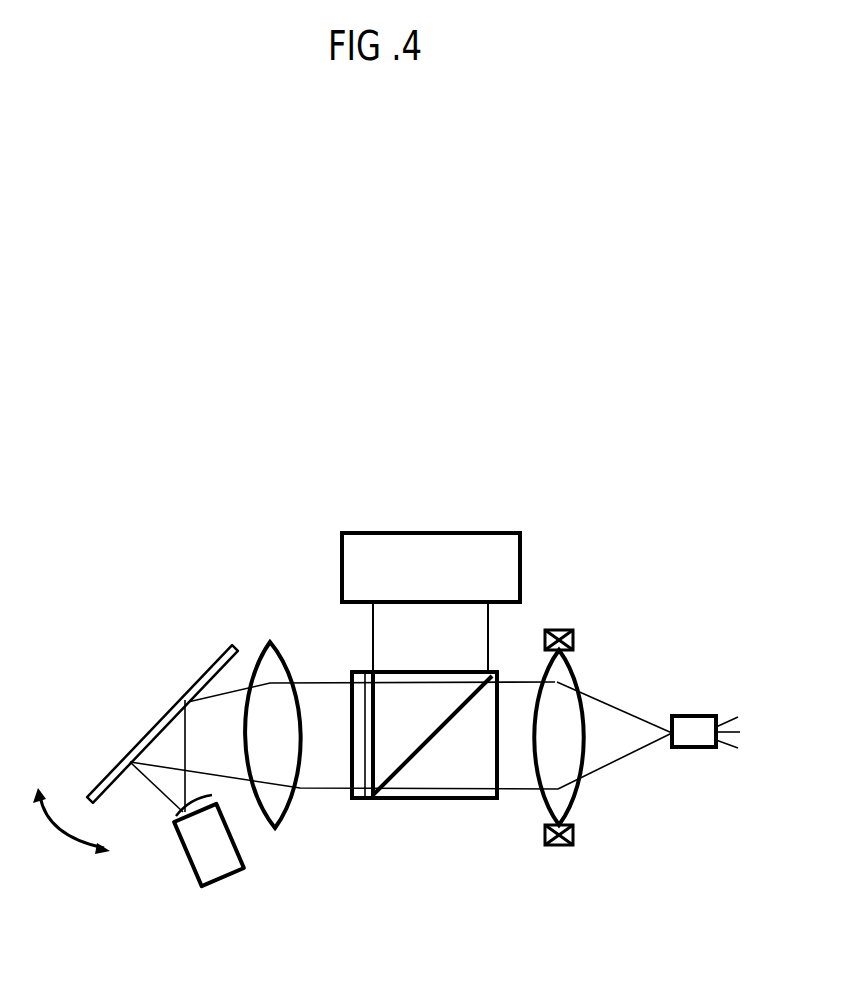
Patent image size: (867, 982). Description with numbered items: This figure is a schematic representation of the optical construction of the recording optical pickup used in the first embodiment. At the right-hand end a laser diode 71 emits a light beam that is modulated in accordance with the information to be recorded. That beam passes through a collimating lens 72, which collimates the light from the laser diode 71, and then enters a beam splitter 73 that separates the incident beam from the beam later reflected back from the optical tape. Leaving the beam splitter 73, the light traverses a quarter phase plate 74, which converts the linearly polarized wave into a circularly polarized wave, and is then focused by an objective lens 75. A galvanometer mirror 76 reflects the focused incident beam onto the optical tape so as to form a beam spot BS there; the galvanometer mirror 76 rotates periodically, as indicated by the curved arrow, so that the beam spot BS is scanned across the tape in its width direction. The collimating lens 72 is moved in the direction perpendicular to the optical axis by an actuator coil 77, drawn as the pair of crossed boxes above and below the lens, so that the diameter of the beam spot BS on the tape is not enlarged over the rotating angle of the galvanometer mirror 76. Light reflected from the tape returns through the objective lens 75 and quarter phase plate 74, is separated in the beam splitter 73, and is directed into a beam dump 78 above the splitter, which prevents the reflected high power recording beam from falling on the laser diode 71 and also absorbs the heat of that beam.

The laser diode 71 is at (692, 725).
The collimating lens 72 is at (572, 672).
The beam splitter 73 is at (462, 790).
The quarter phase plate 74 is at (358, 800).
The objective lens 75 is at (278, 808).
The galvanometer mirror 76 is at (207, 673).
The actuator coil 77 is at (573, 842).
The beam dump 78 is at (430, 533).
The beam spot BS is at (178, 812).